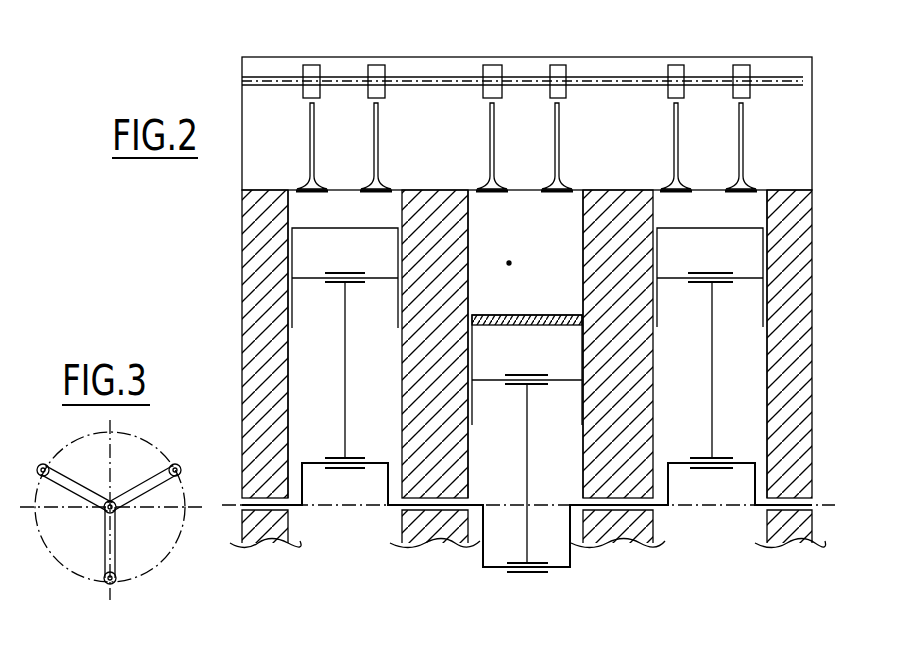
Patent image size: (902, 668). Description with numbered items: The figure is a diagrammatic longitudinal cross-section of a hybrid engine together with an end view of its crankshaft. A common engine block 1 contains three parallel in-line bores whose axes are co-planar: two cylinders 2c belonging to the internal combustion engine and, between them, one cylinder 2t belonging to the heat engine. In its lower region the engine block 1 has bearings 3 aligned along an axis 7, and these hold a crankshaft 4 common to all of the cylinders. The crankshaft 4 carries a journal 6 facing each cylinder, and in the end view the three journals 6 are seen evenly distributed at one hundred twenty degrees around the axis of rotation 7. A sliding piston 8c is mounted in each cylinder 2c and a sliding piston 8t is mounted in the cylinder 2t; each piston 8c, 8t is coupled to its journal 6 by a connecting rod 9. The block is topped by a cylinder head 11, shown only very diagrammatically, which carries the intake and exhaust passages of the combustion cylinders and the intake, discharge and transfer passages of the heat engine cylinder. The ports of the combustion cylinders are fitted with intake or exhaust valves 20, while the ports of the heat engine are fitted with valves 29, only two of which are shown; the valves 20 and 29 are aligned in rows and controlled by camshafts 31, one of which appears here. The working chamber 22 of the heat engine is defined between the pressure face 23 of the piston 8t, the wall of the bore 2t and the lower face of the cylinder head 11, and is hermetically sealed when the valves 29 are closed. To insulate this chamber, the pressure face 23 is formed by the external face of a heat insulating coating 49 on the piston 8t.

In FIG. 2, the engine block 1 is at (256, 245).
In FIG. 2, the cylinder of the internal combustion engine 2c is at (292, 207).
In FIG. 2, the cylinder of the heat engine 2t is at (470, 240).
In FIG. 2, the bearings 3 is at (262, 528).
In FIG. 2, the crankshaft 4 is at (304, 520).
In FIG. 3, the crankshaft 4 is at (184, 462).
In FIG. 2, the journal 6 is at (372, 464).
In FIG. 3, the journal 6 is at (40, 468).
In FIG. 3, the axis of rotation 7 is at (103, 520).
In FIG. 2, the piston of the internal combustion engine 8c is at (282, 270).
In FIG. 2, the piston of the heat engine 8t is at (595, 358).
In FIG. 2, the connecting rod 9 is at (345, 365).
In FIG. 2, the cylinder head 11 is at (242, 108).
In FIG. 2, the intake or exhaust valve 20 is at (305, 152).
In FIG. 2, the working chamber 22 is at (527, 262).
In FIG. 2, the pressure face 23 is at (505, 312).
In FIG. 2, the valve 29 is at (488, 130).
In FIG. 2, the camshaft 31 is at (260, 88).
In FIG. 2, the heat insulating coating 49 is at (532, 328).